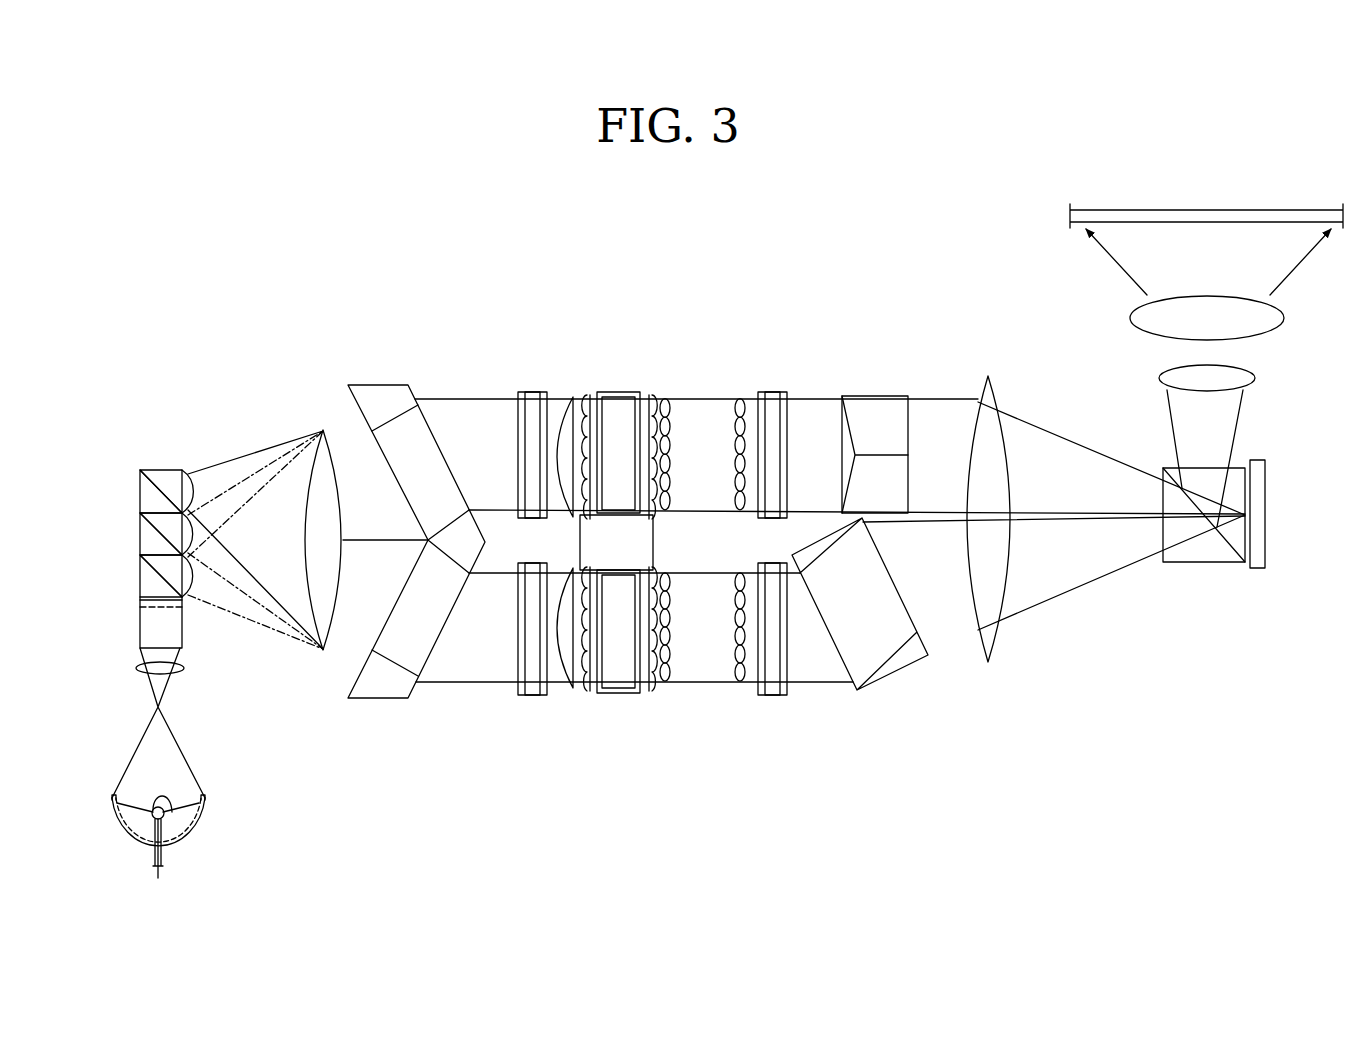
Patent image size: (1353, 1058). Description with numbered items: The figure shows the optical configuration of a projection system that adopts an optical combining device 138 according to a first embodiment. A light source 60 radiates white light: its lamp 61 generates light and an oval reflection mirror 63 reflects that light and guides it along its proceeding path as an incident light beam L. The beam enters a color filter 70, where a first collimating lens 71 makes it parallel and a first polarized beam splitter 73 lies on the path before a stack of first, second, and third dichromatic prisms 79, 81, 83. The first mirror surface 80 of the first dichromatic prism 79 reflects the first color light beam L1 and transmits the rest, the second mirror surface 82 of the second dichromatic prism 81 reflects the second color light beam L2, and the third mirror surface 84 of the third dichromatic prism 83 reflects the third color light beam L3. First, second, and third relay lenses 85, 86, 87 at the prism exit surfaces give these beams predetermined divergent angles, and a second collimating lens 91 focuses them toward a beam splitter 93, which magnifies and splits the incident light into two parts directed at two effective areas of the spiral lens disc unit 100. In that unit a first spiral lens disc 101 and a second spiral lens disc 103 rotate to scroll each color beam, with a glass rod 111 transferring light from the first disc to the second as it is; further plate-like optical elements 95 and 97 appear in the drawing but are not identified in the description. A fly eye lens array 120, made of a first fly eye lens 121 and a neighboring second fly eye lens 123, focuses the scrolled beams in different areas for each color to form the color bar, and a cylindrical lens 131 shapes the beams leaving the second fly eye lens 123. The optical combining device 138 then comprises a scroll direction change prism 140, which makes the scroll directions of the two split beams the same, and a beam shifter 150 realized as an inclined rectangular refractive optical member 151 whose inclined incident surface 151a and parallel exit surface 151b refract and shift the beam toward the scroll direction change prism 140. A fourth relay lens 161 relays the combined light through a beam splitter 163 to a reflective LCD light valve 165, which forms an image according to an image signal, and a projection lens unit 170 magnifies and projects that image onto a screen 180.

The light source 60 is at (139, 837).
The lamp 61 is at (155, 822).
The reflection mirror 63 is at (186, 840).
The color filter 70 is at (160, 534).
The first collimating lens 71 is at (136, 668).
The first polarized beam splitter 73 is at (150, 628).
The first dichromatic prism 79 is at (140, 580).
The first mirror surface 80 is at (158, 575).
The second dichromatic prism 81 is at (140, 538).
The second mirror surface 82 is at (158, 533).
The third dichromatic prism 83 is at (140, 497).
The third mirror surface 84 is at (158, 490).
The first relay lens 85 is at (190, 577).
The second relay lens 86 is at (190, 535).
The third relay lens 87 is at (189, 480).
The second collimating lens 91 is at (323, 654).
The beam splitter 93 is at (370, 700).
The polarizer plate 95 is at (528, 697).
The lens 97 is at (568, 697).
The spiral lens disc unit 100 is at (637, 748).
The first spiral lens disc 101 is at (583, 694).
The second spiral lens disc 103 is at (652, 694).
The glass rod 111 is at (618, 391).
The fly eye lens array 120 is at (728, 746).
The first fly eye lens 121 is at (665, 691).
The second fly eye lens 123 is at (738, 691).
The cylindrical lens 131 is at (771, 697).
The optical combining device 138 is at (962, 325).
The scroll direction change prism 140 is at (878, 390).
The beam shifter 150 is at (901, 560).
The refractive optical member 151 is at (876, 644).
The incident surface 151a is at (842, 662).
The exit surface 151b is at (925, 636).
The fourth relay lens 161 is at (988, 665).
The beam splitter 163 is at (1203, 563).
The light valve 165 is at (1258, 569).
The projection lens unit 170 is at (1120, 315).
The screen 180 is at (1208, 210).
The incident light beam L is at (146, 739).
The first color light beam L1 is at (251, 498).
The second color light beam L2 is at (258, 472).
The third color light beam L3 is at (254, 452).